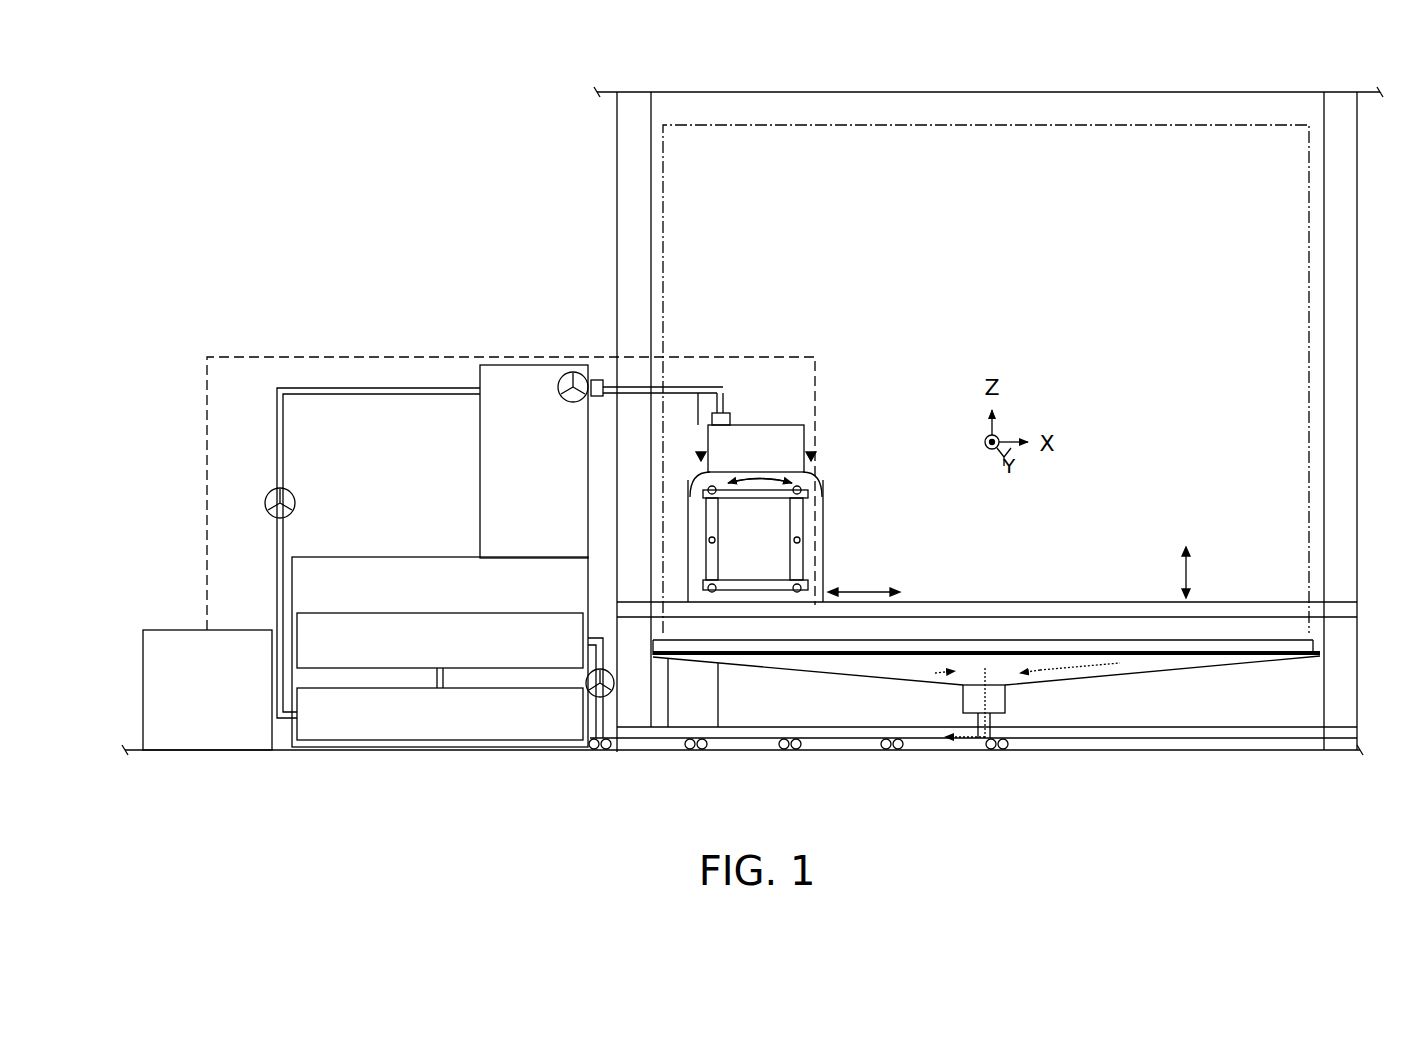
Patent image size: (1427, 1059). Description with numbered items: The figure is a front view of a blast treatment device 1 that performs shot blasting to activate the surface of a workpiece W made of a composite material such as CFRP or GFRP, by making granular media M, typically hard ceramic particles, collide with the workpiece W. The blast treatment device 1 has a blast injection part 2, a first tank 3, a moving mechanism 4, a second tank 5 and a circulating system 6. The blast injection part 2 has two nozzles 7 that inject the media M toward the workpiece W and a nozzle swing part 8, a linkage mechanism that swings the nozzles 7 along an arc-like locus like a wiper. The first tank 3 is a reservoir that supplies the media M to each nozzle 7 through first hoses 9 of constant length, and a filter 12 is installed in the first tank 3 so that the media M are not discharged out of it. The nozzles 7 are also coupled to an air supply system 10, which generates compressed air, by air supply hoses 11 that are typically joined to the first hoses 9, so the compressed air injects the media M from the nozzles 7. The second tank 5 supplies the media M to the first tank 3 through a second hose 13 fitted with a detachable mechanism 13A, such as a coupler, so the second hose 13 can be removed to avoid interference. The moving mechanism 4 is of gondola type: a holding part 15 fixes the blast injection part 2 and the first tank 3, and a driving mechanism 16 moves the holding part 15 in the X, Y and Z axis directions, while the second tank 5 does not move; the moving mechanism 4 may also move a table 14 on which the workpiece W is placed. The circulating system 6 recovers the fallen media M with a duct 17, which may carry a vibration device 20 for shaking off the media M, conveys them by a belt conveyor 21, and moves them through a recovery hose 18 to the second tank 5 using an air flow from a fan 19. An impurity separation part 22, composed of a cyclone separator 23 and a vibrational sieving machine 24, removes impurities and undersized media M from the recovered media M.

The blast treatment device 1 is at (472, 132).
The blast injection part 2 is at (880, 485).
The first tank 3 is at (750, 423).
The moving mechanism 4 is at (1098, 600).
The second tank 5 is at (480, 445).
The circulating system 6 is at (270, 461).
The nozzle 7 is at (808, 492).
The nozzle swing part 8 is at (803, 540).
The first hose 9 is at (822, 480).
The air supply system 10 is at (172, 630).
The air supply hose 11 is at (360, 357).
The filter 12 is at (770, 426).
The second hose 13 is at (686, 385).
The detachable mechanism 13A is at (730, 392).
The table 14 is at (1313, 640).
The holding part 15 is at (825, 580).
The driving mechanism 16 is at (1018, 601).
The duct 17 is at (1186, 673).
The recovery hose 18 is at (276, 545).
The fan 19 is at (285, 494).
The vibration device 20 is at (718, 715).
The belt conveyor 21 is at (826, 752).
The impurity separation part 22 is at (344, 555).
The cyclone separator 23 is at (560, 610).
The vibrational sieving machine 24 is at (520, 748).
The workpiece W is at (651, 256).
The media M is at (1005, 700).